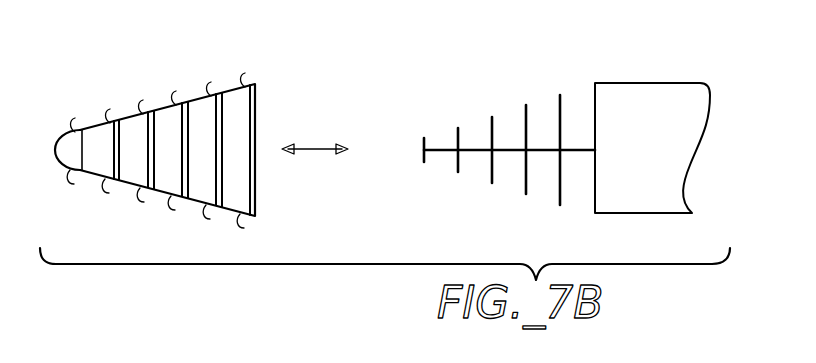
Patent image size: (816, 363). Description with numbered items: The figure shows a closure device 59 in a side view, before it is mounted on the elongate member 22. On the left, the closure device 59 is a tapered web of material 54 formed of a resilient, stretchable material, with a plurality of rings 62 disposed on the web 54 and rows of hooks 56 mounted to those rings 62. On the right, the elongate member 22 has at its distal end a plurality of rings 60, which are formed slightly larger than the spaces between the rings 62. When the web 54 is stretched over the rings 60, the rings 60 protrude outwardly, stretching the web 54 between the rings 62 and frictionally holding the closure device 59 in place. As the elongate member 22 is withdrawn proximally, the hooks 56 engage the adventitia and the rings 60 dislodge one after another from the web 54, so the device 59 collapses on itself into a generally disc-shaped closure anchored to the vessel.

The closure device 59 is at (149, 122).
The rows of hooks 56 is at (74, 128).
The web material 54 is at (162, 109).
The rings 62 is at (222, 112).
The rings 60 is at (428, 141).
The elongate member 22 is at (672, 83).